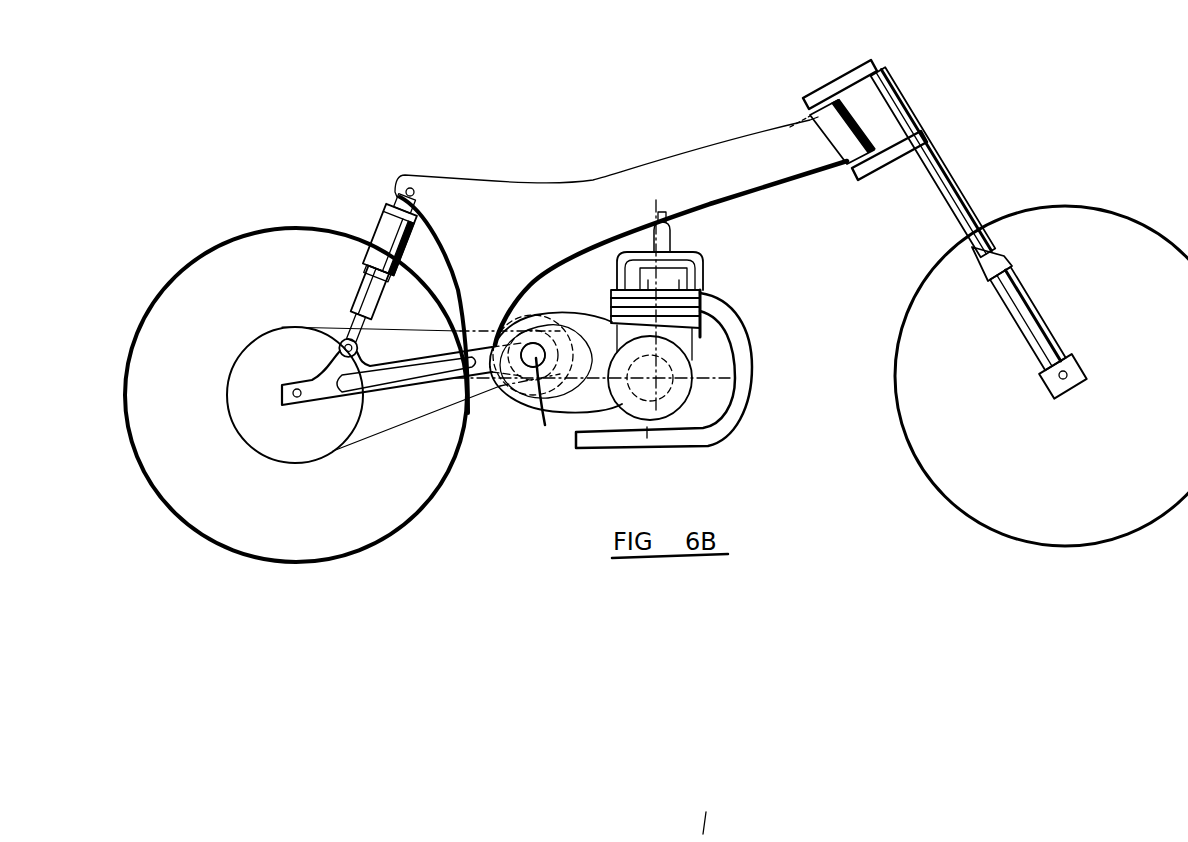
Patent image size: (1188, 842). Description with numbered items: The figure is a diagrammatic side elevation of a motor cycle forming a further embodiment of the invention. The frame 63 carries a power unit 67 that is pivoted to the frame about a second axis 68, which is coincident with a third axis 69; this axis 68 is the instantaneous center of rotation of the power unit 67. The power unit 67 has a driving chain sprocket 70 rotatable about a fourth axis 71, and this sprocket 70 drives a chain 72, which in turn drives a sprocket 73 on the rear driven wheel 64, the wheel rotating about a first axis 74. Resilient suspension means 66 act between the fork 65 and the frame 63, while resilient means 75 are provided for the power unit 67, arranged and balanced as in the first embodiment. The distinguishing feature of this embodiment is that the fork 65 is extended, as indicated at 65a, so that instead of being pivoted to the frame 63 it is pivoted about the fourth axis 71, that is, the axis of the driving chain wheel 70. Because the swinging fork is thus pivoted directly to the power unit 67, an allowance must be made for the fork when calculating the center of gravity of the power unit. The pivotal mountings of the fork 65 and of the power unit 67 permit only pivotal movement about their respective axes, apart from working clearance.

The frame 63 is at (547, 217).
The rear driven wheel 64 is at (420, 508).
The fork 65 is at (422, 367).
The fork extension 65a is at (500, 330).
The resilient suspension means 66 is at (388, 226).
The power unit 67 is at (687, 357).
The second axis 68 is at (540, 352).
The third axis 69 is at (483, 363).
The driving chain sprocket 70 is at (574, 332).
The fourth axis 71 is at (555, 403).
The chain 72 is at (422, 309).
The sprocket 73 is at (305, 447).
The first axis 74 is at (298, 400).
The resilient means 75 is at (673, 222).